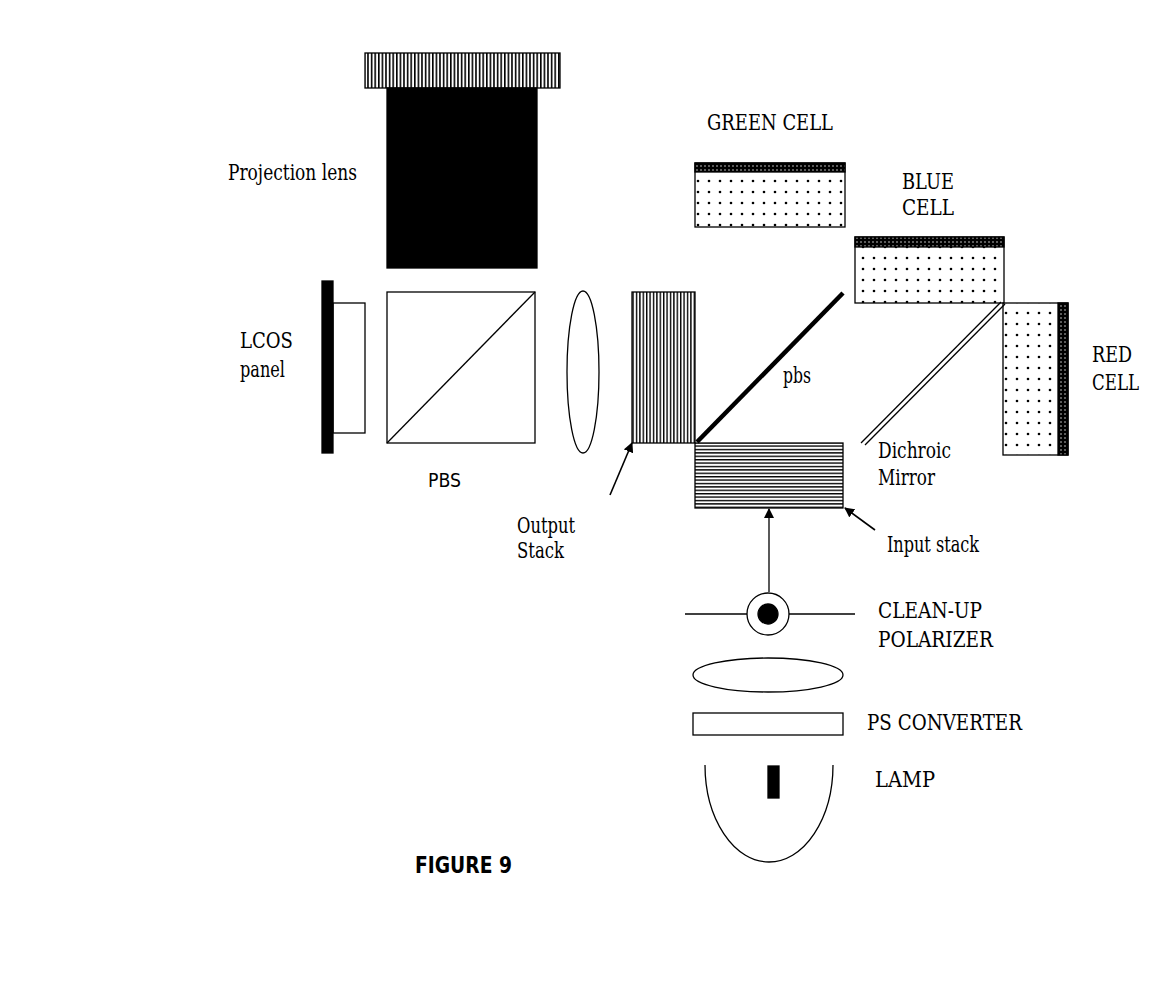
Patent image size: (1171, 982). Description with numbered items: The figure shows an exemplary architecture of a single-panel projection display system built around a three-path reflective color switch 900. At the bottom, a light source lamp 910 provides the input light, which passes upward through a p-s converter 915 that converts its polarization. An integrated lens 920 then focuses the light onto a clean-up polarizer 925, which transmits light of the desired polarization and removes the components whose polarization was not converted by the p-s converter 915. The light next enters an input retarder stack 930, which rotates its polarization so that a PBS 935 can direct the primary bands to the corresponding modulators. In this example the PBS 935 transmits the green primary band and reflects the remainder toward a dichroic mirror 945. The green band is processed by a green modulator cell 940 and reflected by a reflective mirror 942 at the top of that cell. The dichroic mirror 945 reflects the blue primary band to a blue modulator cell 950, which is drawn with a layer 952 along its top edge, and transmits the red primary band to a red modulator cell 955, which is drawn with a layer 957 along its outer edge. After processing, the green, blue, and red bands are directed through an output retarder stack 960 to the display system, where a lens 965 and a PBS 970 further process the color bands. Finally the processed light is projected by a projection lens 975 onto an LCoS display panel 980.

The three-path reflective color switch 900 is at (242, 73).
The light source lamp 910 is at (727, 840).
The p-s converter 915 is at (693, 733).
The integrated lens 920 is at (695, 683).
The clean-up polarizer 925 is at (685, 615).
The input retarder stack 930 is at (693, 510).
The PBS 935 is at (808, 323).
The green modulator cell 940 is at (738, 188).
The reflective mirror 942 is at (695, 163).
The dichroic mirror 945 is at (915, 387).
The blue modulator cell 950 is at (962, 250).
The blue cell retarder layer 952 is at (993, 238).
The red modulator cell 955 is at (1066, 388).
The red cell retarder layer 957 is at (1070, 317).
The output retarder stack 960 is at (655, 290).
The lens 965 is at (580, 458).
The PBS 970 is at (395, 447).
The projection lens 975 is at (385, 207).
The LCoS display panel 980 is at (325, 458).